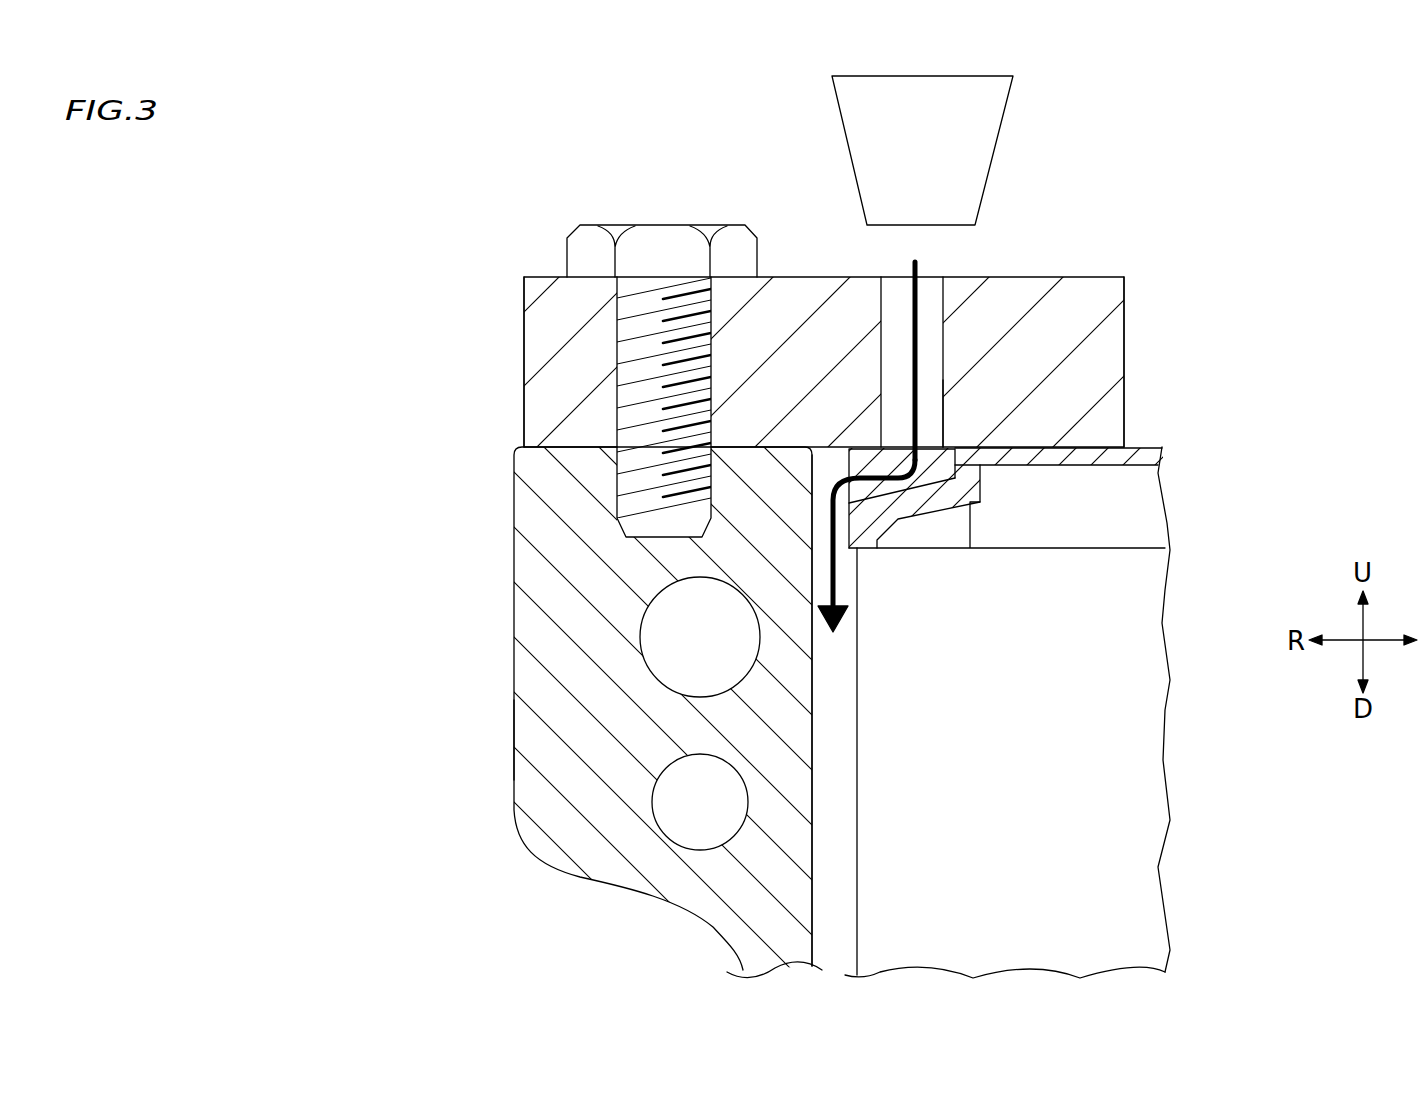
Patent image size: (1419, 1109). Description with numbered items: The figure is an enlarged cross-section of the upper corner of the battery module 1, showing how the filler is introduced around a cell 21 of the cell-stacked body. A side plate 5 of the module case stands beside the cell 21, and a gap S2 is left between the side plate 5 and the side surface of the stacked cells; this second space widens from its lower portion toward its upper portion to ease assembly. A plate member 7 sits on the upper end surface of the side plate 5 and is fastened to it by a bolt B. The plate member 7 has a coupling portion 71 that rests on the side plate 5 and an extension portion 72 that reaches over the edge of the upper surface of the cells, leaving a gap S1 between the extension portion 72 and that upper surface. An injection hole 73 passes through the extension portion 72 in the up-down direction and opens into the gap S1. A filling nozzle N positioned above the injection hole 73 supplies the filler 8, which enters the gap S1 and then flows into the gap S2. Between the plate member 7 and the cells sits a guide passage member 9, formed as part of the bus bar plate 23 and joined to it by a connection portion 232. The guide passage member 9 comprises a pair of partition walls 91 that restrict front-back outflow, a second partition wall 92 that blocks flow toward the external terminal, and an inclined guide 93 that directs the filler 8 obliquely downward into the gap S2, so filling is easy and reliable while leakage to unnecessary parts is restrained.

The battery module 1 is at (1208, 177).
The side plate 5 is at (514, 674).
The plate member 7 is at (524, 340).
The coupling portion 71 is at (570, 396).
The extension portion 72 is at (1098, 357).
The injection hole 73 is at (930, 292).
The filler 8 is at (833, 566).
The guide passage member 9 is at (930, 522).
The partition wall 91 is at (848, 462).
The second partition wall 92 is at (943, 417).
The inclined guide 93 is at (865, 480).
The cell 21 is at (1093, 860).
The bus bar plate 23 is at (1154, 503).
The connection portion 232 is at (1058, 476).
The bolt B is at (617, 228).
The filling nozzle N is at (1002, 128).
The gap (first space) S1 is at (878, 490).
The gap (second space) S2 is at (840, 733).